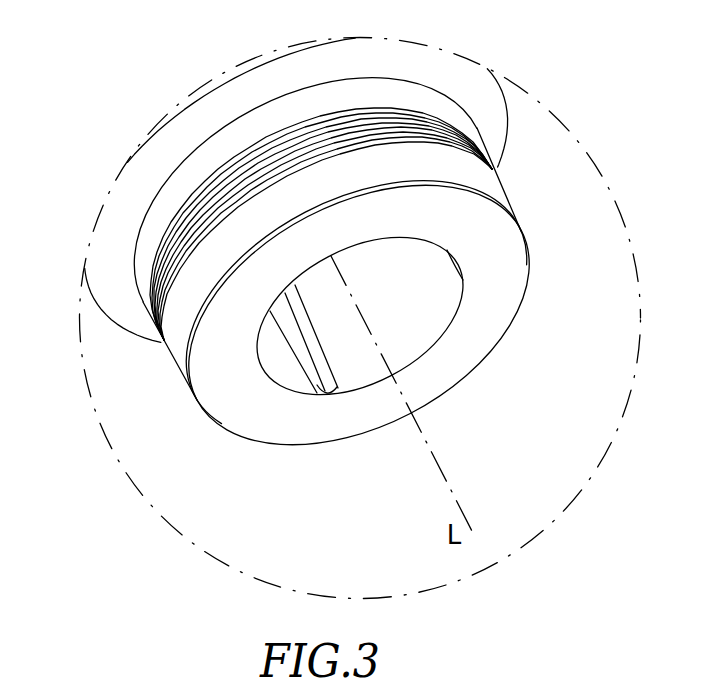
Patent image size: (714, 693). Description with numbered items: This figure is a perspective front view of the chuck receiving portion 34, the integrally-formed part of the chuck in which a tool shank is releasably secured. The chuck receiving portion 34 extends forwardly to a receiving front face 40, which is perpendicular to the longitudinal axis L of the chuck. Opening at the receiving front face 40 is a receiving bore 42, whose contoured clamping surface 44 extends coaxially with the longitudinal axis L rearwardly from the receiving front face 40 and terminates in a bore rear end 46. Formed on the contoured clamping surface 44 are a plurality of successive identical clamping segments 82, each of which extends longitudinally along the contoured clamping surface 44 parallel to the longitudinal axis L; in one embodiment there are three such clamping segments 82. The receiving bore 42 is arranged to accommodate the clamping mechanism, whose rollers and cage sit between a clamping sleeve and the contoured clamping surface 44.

The chuck receiving portion 34 is at (108, 167).
The receiving front face 40 is at (338, 420).
The receiving bore 42 is at (447, 300).
The contoured clamping surface 44 is at (407, 338).
The bore rear end 46 is at (210, 92).
The clamping segment 82 is at (380, 400).